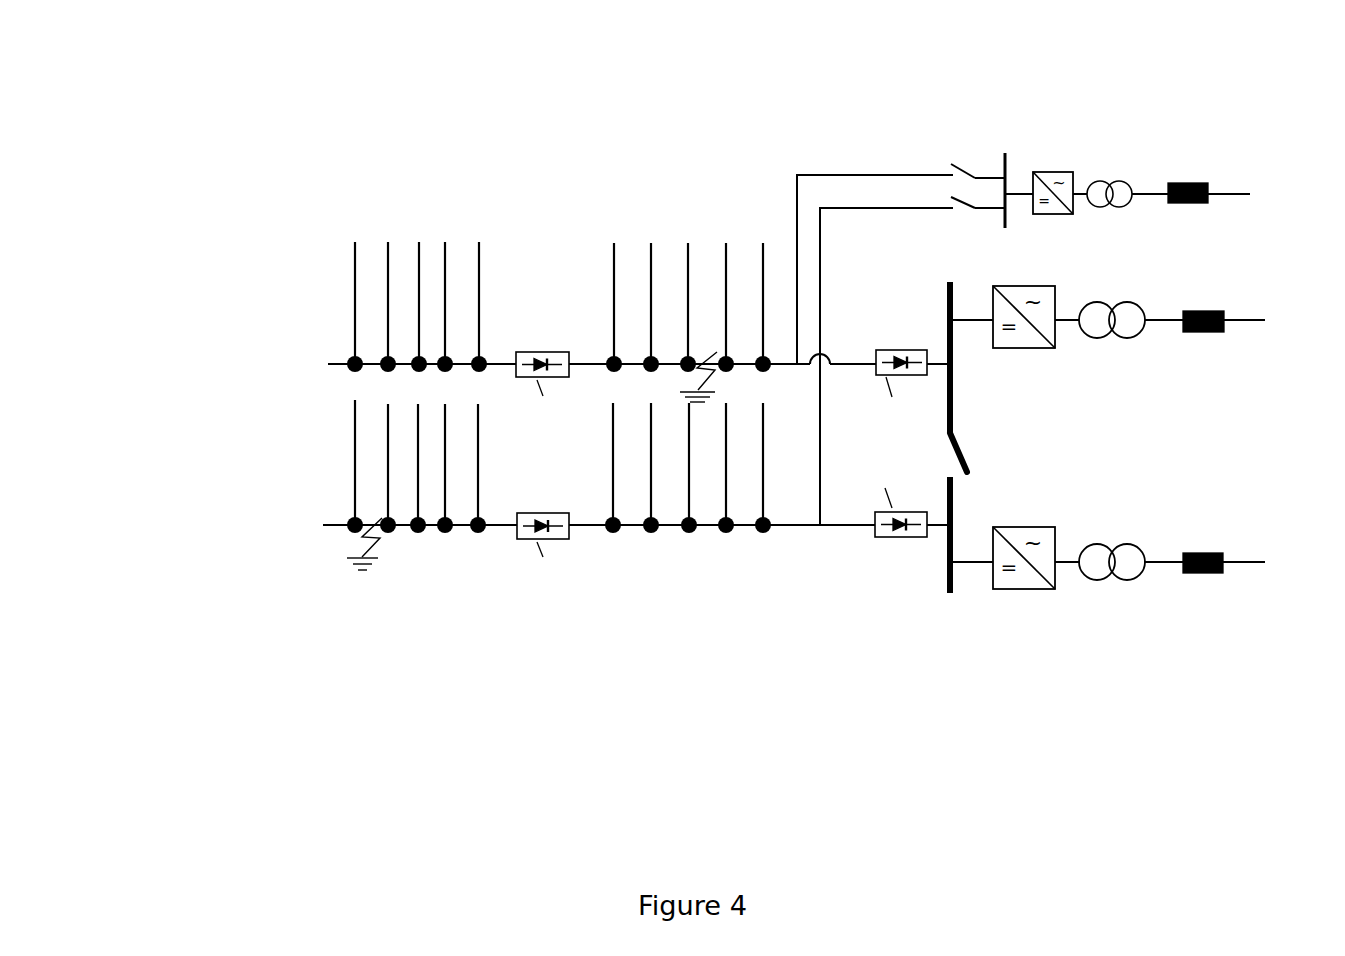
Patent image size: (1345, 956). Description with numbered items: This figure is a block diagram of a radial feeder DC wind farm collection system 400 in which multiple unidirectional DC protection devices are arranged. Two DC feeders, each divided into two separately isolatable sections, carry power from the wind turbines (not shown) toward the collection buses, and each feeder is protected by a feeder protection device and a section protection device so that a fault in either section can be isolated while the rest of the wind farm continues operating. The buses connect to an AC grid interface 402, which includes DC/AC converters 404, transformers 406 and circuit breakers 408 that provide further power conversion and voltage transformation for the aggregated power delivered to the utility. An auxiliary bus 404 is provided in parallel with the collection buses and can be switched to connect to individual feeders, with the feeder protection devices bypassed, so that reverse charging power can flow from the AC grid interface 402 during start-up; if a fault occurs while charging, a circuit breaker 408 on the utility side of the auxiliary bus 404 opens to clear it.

The DC collection system 400 is at (240, 102).
The AC grid interface 402 is at (1093, 685).
The DC/AC converter 404 is at (886, 155).
The transformer 406 is at (1109, 220).
The circuit breaker 408 is at (1193, 205).